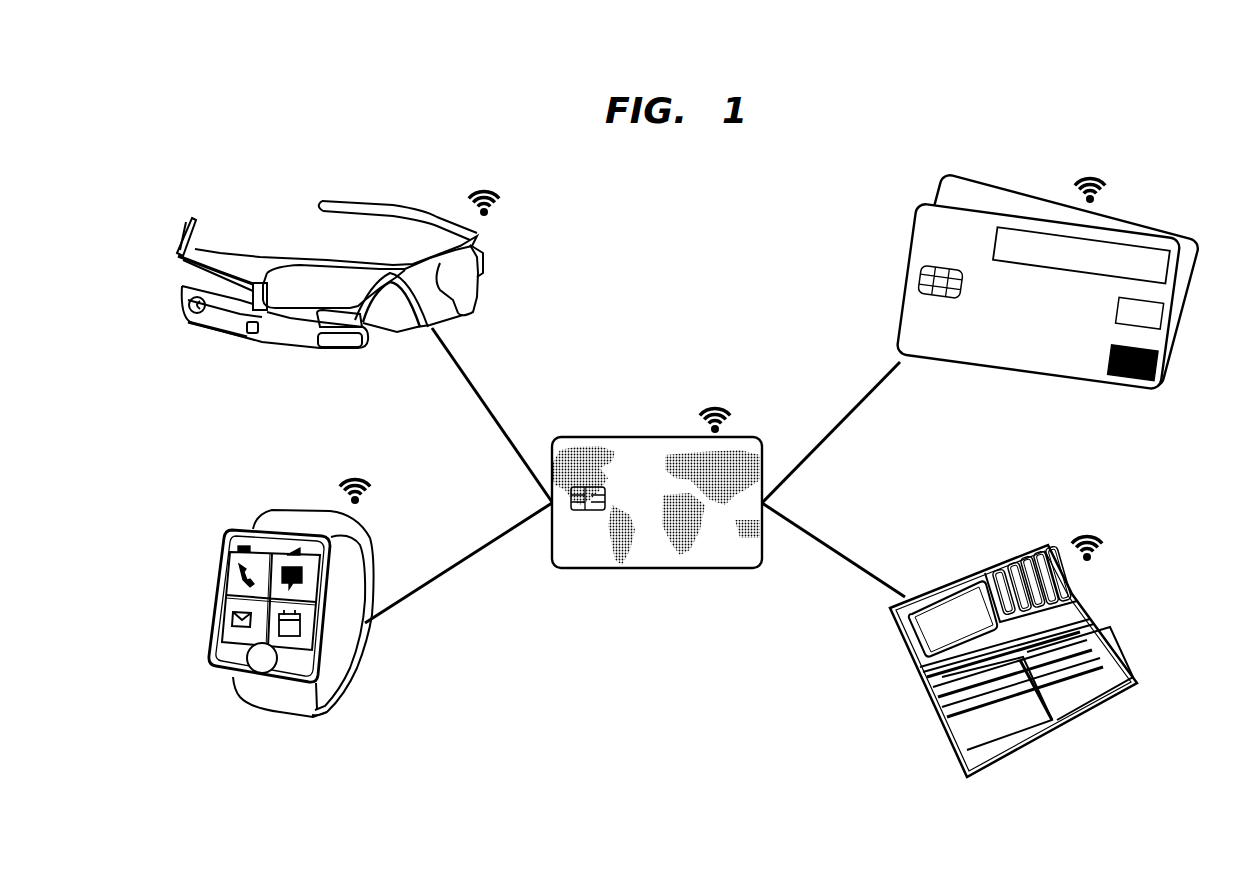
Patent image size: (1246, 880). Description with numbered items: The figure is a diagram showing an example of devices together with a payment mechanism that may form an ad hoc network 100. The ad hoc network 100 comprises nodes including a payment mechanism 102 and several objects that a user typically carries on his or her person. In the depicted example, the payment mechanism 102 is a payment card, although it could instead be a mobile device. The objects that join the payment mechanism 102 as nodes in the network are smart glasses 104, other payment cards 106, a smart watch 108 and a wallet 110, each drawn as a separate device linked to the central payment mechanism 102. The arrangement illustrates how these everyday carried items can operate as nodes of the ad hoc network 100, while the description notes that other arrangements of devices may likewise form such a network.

The ad hoc network 100 is at (684, 174).
The payment mechanism 102 is at (622, 436).
The smart glasses 104 is at (253, 213).
The other payment cards 106 is at (1143, 211).
The smart watch 108 is at (227, 522).
The wallet 110 is at (1122, 617).